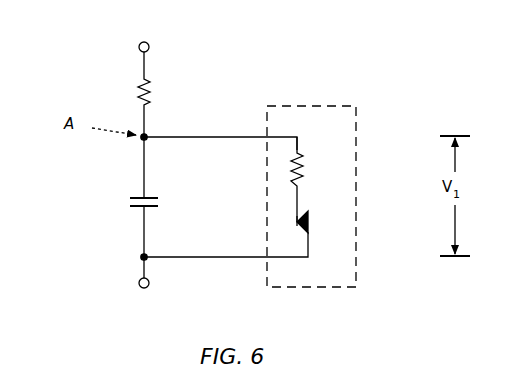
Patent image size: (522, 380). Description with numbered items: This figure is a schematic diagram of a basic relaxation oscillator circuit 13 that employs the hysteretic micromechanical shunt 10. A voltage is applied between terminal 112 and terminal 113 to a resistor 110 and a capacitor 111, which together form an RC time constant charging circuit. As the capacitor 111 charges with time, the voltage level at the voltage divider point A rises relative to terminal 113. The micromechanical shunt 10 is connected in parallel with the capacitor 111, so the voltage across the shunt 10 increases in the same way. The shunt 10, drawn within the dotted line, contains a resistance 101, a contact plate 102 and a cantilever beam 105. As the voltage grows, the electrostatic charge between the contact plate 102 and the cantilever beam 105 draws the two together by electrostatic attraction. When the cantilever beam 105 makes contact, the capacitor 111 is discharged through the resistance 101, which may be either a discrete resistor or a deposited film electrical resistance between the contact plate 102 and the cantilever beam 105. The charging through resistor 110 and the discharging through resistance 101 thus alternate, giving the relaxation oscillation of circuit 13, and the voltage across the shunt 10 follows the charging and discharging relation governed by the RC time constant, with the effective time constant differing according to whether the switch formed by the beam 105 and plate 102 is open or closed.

The relaxation oscillator circuit 13 is at (305, 55).
The micromechanical shunt 10 is at (357, 271).
The resistance 101 is at (300, 178).
The contact plate 102 is at (298, 218).
The cantilever beam 105 is at (308, 238).
The resistor 110 is at (149, 100).
The capacitor 111 is at (136, 194).
The terminal 112 is at (138, 47).
The terminal 113 is at (139, 283).